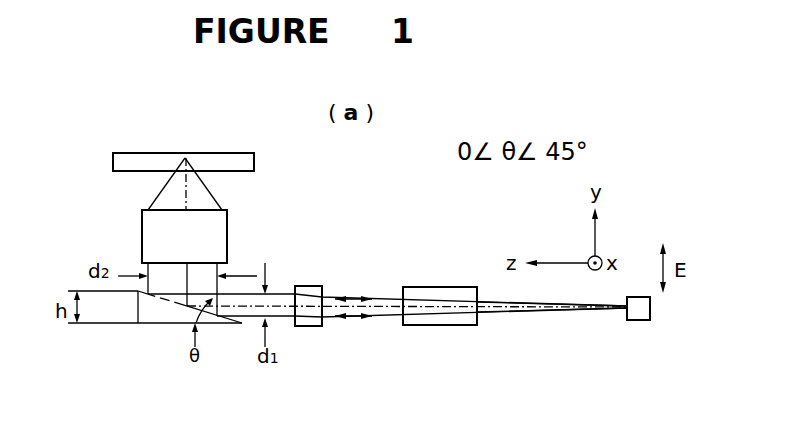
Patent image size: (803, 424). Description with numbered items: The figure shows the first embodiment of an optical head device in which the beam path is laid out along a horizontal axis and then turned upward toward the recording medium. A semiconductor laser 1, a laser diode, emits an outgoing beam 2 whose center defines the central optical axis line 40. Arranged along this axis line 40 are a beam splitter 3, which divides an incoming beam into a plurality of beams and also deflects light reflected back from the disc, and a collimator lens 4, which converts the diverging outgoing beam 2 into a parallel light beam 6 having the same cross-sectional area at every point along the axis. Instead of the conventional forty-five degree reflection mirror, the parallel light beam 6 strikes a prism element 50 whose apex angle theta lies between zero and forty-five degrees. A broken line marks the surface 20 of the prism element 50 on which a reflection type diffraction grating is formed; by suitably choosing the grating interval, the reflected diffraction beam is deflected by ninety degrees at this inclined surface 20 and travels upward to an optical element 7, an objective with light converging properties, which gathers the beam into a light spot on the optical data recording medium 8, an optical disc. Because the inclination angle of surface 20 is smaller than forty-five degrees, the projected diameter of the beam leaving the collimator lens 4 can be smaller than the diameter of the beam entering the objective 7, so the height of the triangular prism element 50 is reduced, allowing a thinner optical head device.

The semiconductor laser 1 is at (633, 321).
The outgoing beam 2 is at (507, 310).
The beam splitter 3 is at (430, 325).
The collimator lens 4 is at (308, 327).
The parallel light beam 6 is at (278, 294).
The optical element 7 is at (227, 220).
The optical data recording medium 8 is at (254, 163).
The surface of the prism element 20 is at (172, 300).
The central optical axis line 40 is at (387, 308).
The prism element 50 is at (132, 308).